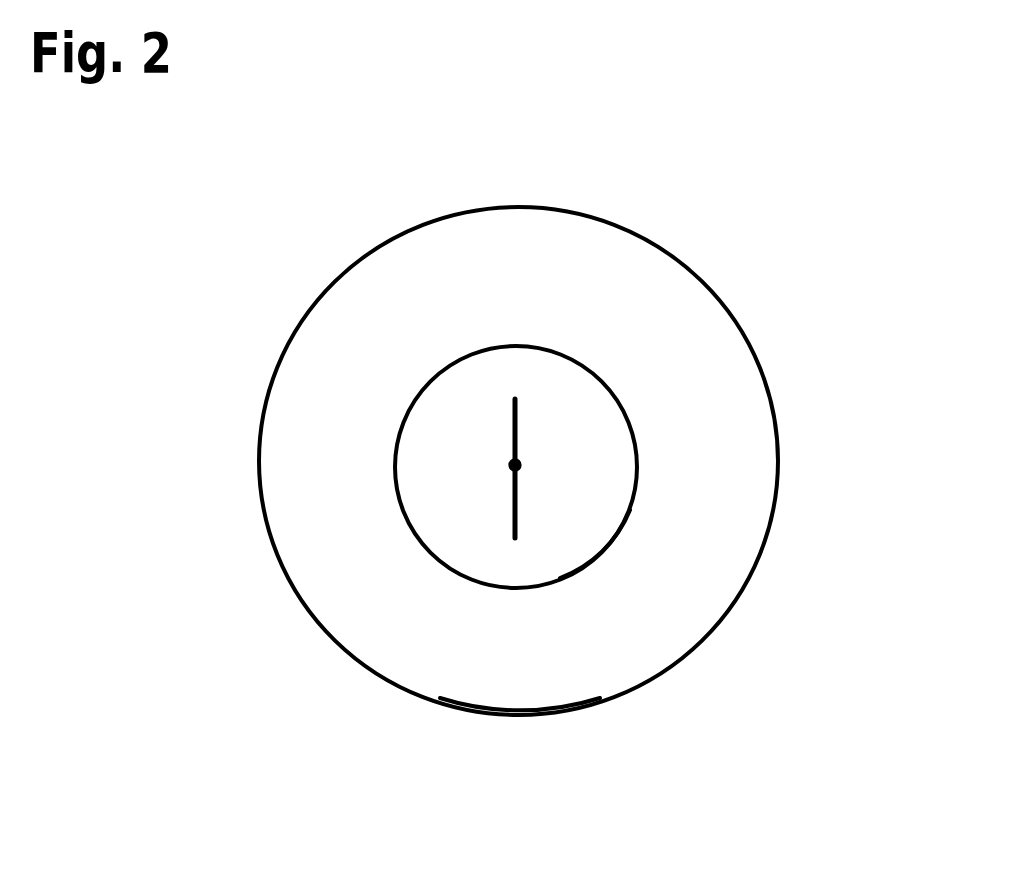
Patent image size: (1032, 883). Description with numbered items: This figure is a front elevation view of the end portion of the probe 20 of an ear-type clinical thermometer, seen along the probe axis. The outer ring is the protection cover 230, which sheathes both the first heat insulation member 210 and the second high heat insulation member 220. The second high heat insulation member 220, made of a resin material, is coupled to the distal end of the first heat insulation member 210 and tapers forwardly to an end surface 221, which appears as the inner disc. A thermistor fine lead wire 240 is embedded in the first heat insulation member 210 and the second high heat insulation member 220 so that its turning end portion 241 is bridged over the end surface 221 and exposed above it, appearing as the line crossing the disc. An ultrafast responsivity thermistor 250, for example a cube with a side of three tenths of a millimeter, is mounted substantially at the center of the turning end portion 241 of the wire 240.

The probe 20 is at (610, 192).
The first heat insulation member 210 is at (298, 450).
The second high heat insulation member 220 is at (513, 362).
The end surface 221 is at (587, 532).
The protection cover 230 is at (468, 712).
The thermistor fine lead wire 240 is at (507, 420).
The turning end portion 241 is at (513, 503).
The ultrafast responsivity thermistor 250 is at (516, 465).